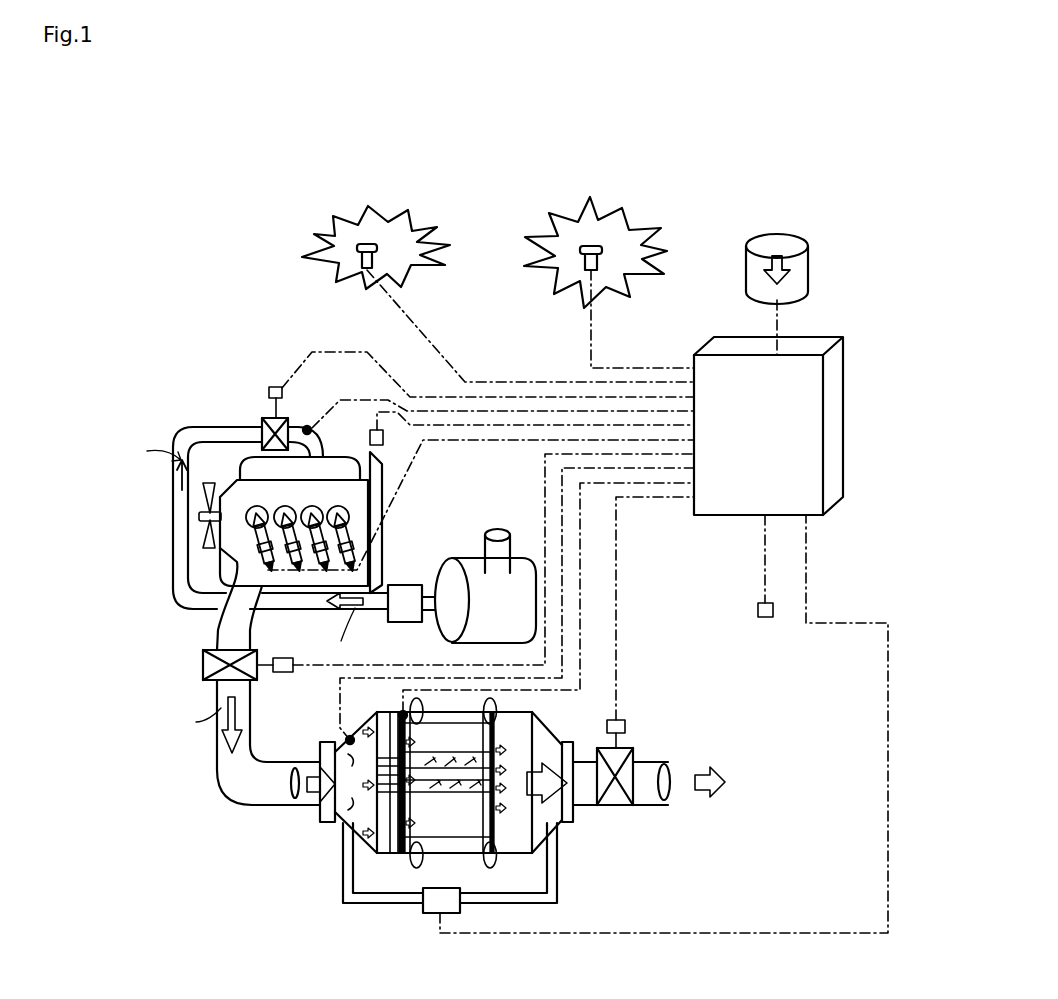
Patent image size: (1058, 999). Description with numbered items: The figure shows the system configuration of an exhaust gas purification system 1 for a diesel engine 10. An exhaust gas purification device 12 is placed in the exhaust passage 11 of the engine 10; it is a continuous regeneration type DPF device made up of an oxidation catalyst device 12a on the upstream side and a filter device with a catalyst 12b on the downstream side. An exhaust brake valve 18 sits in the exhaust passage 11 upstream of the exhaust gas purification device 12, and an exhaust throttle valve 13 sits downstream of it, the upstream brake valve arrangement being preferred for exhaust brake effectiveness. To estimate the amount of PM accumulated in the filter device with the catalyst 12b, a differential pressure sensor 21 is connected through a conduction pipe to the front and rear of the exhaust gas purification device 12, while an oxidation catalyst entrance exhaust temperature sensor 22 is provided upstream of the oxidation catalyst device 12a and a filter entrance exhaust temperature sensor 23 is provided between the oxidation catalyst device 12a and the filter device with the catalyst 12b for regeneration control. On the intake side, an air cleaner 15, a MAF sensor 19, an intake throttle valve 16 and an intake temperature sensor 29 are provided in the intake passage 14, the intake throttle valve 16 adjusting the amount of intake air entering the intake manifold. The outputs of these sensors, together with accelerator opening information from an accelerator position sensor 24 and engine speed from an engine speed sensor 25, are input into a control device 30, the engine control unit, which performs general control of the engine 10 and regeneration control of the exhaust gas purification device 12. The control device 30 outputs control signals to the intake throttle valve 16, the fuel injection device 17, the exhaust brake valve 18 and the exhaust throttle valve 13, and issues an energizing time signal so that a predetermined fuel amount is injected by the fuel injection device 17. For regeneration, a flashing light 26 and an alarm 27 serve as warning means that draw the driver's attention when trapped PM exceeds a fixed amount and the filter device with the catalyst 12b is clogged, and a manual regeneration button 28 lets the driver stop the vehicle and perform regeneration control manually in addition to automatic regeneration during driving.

The exhaust gas purification system 1 is at (710, 257).
The diesel engine 10 is at (233, 493).
The exhaust passage 11 is at (243, 792).
The exhaust gas purification device 12 is at (447, 848).
The oxidation catalyst device 12a is at (387, 823).
The filter device with a catalyst 12b is at (462, 823).
The exhaust throttle valve 13 is at (627, 752).
The intake passage 14 is at (173, 497).
The air cleaner 15 is at (473, 572).
The intake throttle valve 16 is at (267, 418).
The fuel injection device 17 is at (250, 545).
The exhaust brake valve 18 is at (204, 668).
The MAF sensor 19 is at (405, 585).
The differential pressure sensor 21 is at (433, 900).
The oxidation catalyst entrance exhaust temperature sensor 22 is at (348, 737).
The filter entrance exhaust temperature sensor 23 is at (400, 708).
The accelerator position sensor 24 is at (766, 618).
The engine speed sensor 25 is at (372, 430).
The flashing light 26 is at (370, 243).
The alarm 27 is at (592, 247).
The manual regeneration button 28 is at (793, 243).
The intake temperature sensor 29 is at (307, 426).
The control device 30 is at (845, 448).